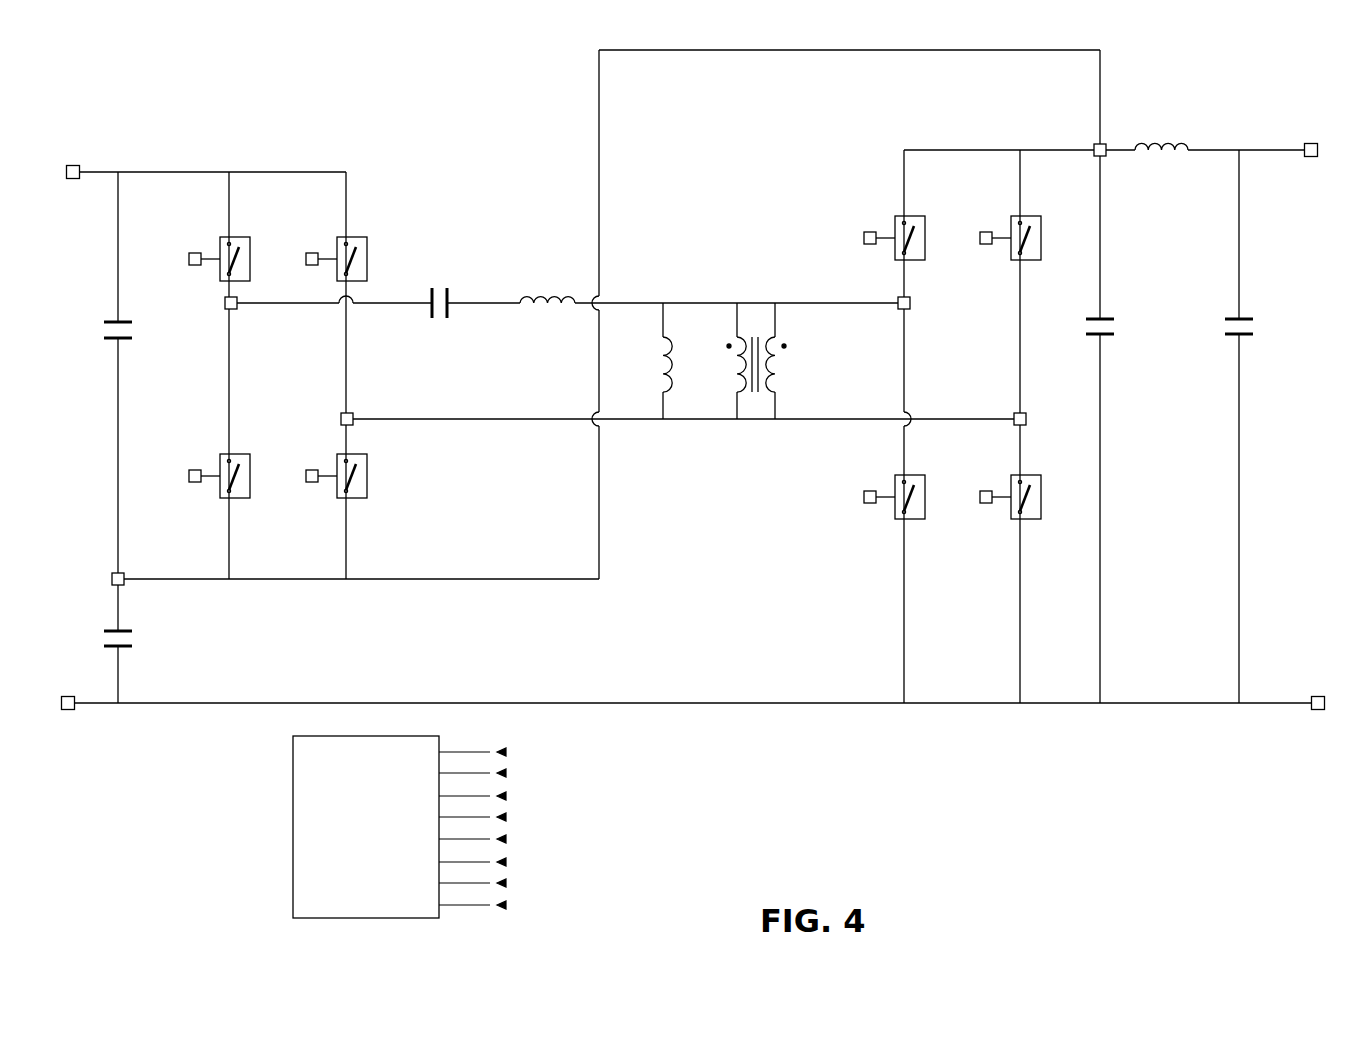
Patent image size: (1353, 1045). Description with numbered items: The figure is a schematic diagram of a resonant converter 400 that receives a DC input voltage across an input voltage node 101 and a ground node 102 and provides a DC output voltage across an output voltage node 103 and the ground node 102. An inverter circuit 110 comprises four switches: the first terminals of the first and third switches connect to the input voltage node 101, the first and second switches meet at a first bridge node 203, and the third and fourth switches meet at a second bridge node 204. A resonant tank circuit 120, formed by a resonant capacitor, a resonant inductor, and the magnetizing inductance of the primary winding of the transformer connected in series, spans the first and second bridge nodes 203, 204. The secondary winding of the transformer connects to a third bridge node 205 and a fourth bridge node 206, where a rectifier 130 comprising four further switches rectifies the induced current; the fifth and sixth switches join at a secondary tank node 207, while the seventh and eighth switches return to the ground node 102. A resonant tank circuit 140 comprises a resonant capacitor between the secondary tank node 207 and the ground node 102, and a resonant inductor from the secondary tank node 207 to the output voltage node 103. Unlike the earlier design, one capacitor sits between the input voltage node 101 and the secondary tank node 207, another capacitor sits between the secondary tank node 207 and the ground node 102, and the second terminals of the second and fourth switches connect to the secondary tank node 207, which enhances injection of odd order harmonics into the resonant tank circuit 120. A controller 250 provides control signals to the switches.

The resonant converter 400 is at (232, 87).
The inverter circuit 110 is at (388, 173).
The resonant tank circuit 120 is at (505, 242).
The rectifier 130 is at (803, 193).
The resonant tank circuit 140 is at (1158, 85).
The input voltage node 101 is at (73, 180).
The ground node 102 is at (68, 696).
The output voltage node 103 is at (1311, 158).
The first bridge node 203 is at (224, 303).
The second bridge node 204 is at (340, 417).
The third bridge node 205 is at (911, 303).
The fourth bridge node 206 is at (1028, 420).
The secondary tank node 207 is at (111, 577).
The controller 250 is at (408, 827).